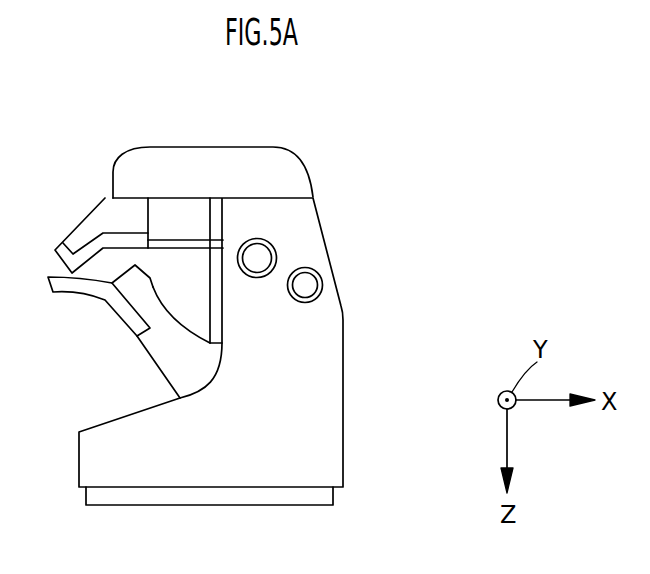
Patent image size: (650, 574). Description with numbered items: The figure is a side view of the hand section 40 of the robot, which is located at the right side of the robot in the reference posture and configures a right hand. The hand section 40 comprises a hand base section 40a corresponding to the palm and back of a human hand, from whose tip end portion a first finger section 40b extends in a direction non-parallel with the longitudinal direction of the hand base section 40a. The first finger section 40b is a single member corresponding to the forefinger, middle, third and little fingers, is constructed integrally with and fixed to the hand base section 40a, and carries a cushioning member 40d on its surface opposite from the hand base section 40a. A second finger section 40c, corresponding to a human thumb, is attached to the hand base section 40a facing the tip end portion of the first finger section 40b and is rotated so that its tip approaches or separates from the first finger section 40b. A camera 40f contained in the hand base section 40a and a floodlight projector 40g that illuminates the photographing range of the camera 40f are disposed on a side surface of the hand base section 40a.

The hand section 40 is at (358, 120).
The hand base section 40a is at (335, 377).
The first finger section 40b is at (90, 225).
The second finger section 40c is at (160, 360).
The cushioning member 40d is at (265, 153).
The camera 40f is at (275, 245).
The floodlight projector 40g is at (323, 281).